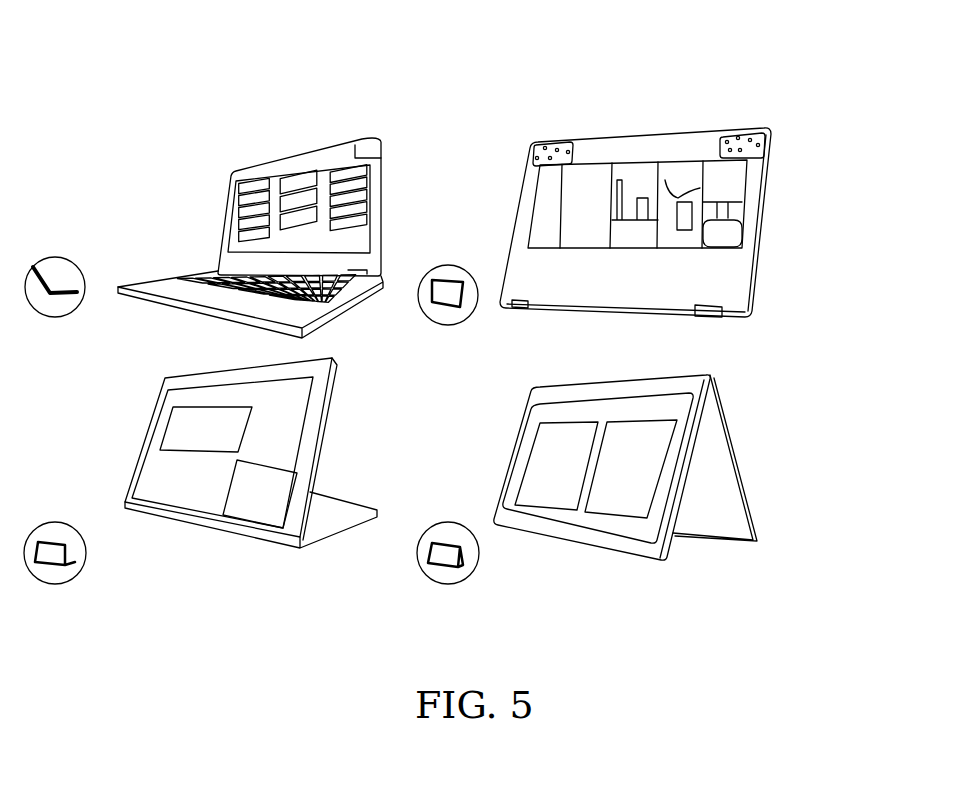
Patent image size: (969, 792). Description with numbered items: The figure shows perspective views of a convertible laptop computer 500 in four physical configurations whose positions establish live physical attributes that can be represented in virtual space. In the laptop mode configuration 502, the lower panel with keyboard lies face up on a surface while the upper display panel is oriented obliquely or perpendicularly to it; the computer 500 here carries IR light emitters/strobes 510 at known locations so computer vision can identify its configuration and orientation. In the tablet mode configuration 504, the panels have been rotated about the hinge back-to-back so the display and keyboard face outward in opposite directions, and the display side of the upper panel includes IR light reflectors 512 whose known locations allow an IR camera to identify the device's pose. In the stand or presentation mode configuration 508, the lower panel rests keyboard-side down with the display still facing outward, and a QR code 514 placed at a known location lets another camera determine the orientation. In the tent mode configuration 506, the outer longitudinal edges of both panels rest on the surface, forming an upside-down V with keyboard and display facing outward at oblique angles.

The convertible laptop computer 500 is at (815, 60).
The laptop mode configuration 502 is at (245, 167).
The tablet mode configuration 504 is at (762, 228).
The tent mode configuration 506 is at (648, 562).
The stand or presentation mode configuration 508 is at (155, 515).
The IR light emitters/strobes 510 is at (383, 142).
The IR light reflectors 512 is at (555, 142).
The QR code 514 is at (302, 482).